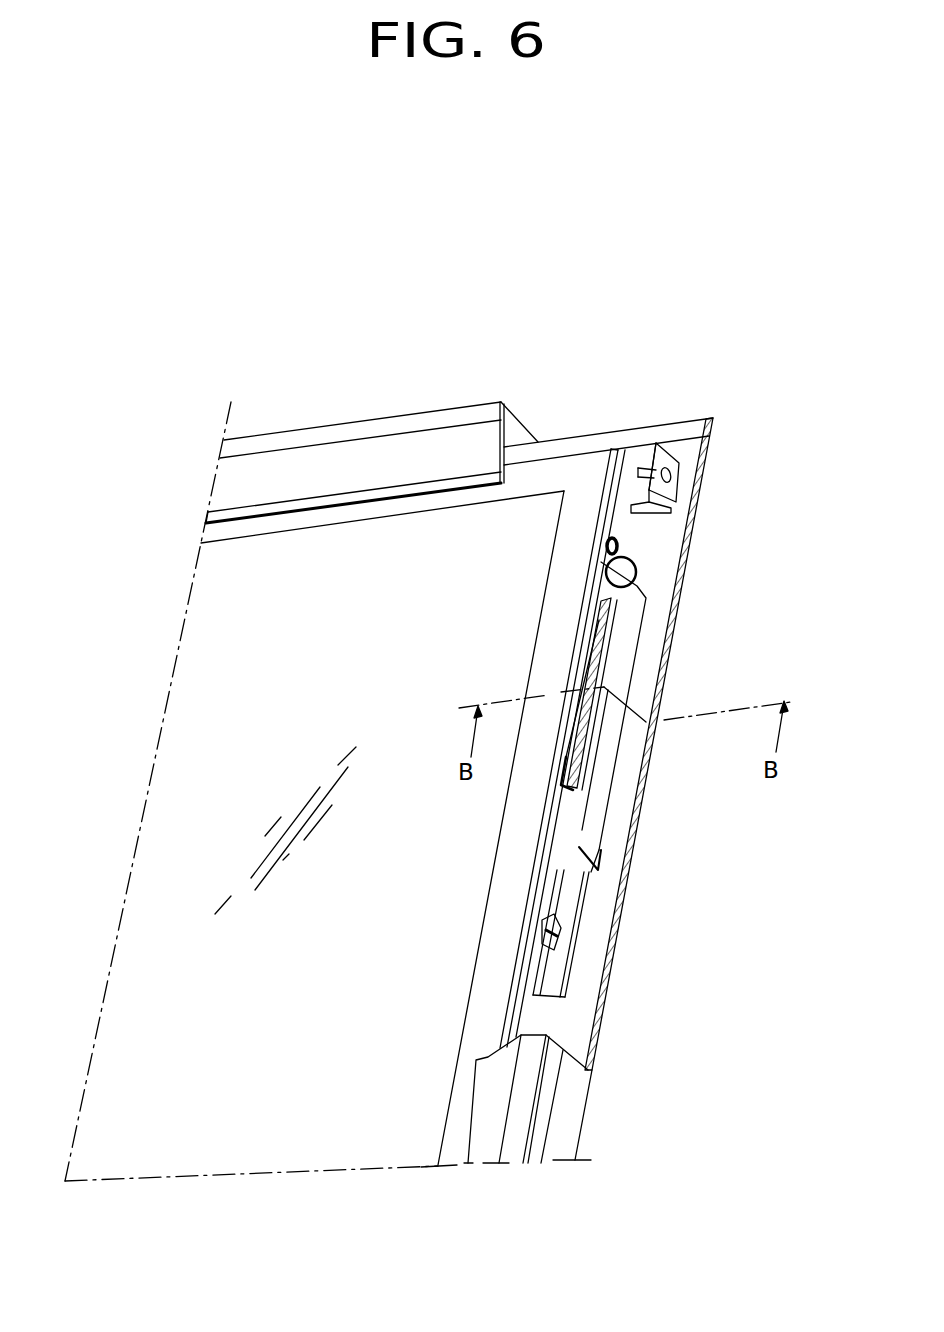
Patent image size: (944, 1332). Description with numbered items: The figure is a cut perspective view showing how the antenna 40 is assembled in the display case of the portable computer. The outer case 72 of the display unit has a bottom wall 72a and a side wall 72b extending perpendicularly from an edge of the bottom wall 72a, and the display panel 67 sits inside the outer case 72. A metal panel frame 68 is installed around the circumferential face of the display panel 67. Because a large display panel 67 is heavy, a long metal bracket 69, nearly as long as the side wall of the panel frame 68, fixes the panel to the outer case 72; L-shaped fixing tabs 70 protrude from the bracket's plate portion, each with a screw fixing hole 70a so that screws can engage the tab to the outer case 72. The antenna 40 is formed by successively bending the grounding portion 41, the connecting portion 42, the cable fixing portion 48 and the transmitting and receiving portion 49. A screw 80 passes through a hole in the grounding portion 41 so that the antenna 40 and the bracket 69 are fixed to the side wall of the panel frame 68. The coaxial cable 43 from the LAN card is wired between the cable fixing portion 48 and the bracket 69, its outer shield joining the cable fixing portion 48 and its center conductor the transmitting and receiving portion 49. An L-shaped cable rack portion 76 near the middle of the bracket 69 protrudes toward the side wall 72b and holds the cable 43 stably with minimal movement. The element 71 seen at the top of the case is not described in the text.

The antenna 40 is at (656, 737).
The grounding portion 41 is at (550, 828).
The connecting portion 42 is at (557, 970).
The coaxial cable 43 is at (636, 566).
The cable fixing portion 48 is at (613, 740).
The transmitting and receiving portion 49 is at (572, 770).
The display panel 67 is at (530, 512).
The panel frame 68 is at (583, 462).
The bracket 69 is at (622, 458).
The fixing tab 70 is at (725, 436).
The screw fixing hole 70a is at (680, 463).
The upper bar 71 is at (327, 448).
The outer case 72 is at (713, 417).
The bottom wall 72a is at (645, 690).
The side wall 72b is at (562, 1092).
The cable rack portion 76 is at (553, 922).
The screw 80 is at (627, 540).